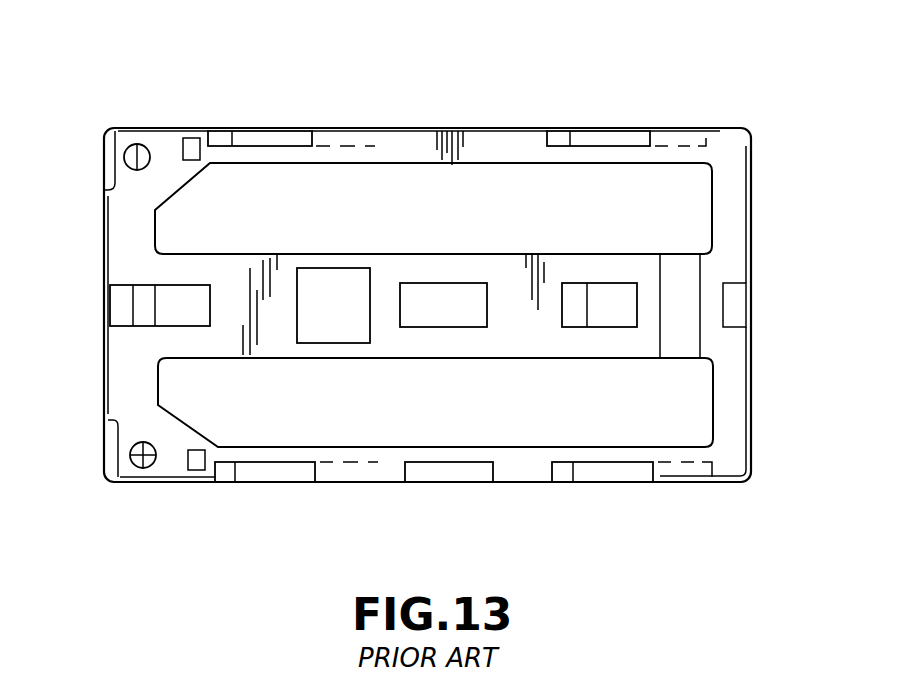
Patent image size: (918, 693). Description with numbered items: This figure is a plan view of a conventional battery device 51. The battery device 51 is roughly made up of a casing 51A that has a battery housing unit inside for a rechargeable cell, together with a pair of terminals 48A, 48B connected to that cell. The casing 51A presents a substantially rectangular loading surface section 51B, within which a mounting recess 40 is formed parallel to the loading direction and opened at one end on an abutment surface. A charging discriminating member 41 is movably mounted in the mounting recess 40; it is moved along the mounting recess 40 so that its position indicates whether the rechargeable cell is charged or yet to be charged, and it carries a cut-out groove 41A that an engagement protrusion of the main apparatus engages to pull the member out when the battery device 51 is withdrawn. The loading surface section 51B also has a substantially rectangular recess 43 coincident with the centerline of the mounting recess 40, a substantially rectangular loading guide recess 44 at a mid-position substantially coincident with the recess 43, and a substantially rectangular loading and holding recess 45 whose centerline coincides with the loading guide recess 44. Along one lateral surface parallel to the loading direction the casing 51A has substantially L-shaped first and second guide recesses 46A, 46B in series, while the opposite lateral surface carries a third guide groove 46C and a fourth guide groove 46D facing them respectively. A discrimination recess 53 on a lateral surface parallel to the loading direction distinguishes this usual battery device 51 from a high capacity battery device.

The battery device 51 is at (707, 97).
The casing 51A is at (726, 128).
The loading surface section 51B is at (688, 410).
The mounting recess 40 is at (106, 310).
The charging discriminating member 41 is at (125, 322).
The cut-out groove 41A is at (147, 320).
The recess 43 is at (335, 320).
The loading guide recess 44 is at (458, 312).
The loading and holding recess 45 is at (605, 310).
The first guide recess 46A is at (278, 135).
The second guide recess 46B is at (612, 128).
The third guide groove 46C is at (283, 476).
The fourth guide groove 46D is at (615, 476).
The terminal 48A is at (104, 160).
The terminal 48B is at (112, 445).
The discrimination recess 53 is at (455, 476).